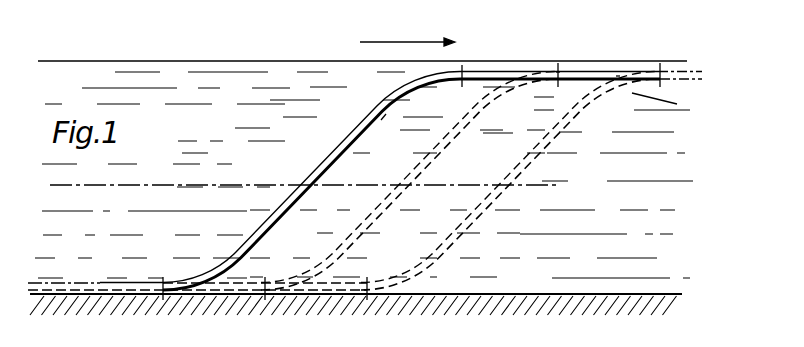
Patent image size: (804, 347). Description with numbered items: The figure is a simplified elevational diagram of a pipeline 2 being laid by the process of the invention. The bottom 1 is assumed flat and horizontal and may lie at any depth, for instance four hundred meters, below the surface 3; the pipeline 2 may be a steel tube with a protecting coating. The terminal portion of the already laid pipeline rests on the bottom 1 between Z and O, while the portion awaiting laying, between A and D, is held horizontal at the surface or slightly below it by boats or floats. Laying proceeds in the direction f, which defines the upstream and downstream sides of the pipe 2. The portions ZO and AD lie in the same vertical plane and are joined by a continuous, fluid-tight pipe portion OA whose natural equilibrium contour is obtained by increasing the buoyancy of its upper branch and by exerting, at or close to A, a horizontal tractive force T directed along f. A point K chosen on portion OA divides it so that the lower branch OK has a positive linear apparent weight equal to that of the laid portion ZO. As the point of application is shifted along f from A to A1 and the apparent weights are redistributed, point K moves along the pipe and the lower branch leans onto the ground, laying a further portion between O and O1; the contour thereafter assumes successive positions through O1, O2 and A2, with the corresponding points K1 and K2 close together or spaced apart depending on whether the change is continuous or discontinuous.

The bottom 1 is at (517, 290).
The pipeline 2 is at (596, 71).
The surface 3 is at (205, 59).
The laying direction f is at (407, 48).
The point K is at (310, 182).
The position K1 is at (405, 182).
The position K2 is at (503, 182).
The point of application A is at (463, 72).
The horizontal tractive force T is at (558, 59).
The next position A1 is at (558, 72).
The point D is at (618, 75).
The position A2 is at (663, 73).
The point O is at (167, 281).
The position O1 is at (268, 281).
The position O2 is at (371, 281).
The point Z is at (103, 292).